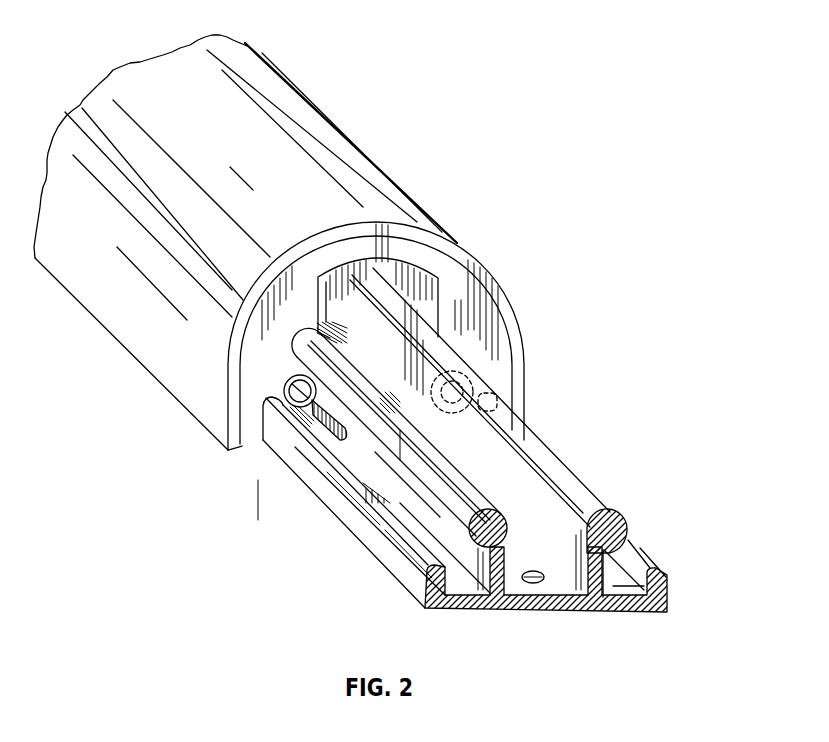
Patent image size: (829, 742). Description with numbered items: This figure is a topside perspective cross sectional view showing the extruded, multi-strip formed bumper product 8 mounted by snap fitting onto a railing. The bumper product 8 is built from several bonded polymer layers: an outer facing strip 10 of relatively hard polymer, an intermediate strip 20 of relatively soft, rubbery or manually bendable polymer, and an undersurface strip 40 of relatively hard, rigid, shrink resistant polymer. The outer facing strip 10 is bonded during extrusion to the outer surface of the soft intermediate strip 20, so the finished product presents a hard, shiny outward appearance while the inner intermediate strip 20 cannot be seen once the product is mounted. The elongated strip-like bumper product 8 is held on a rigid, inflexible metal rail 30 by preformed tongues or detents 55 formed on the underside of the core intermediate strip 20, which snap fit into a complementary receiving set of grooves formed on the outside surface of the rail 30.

The multi-strip formed bumper product 8 is at (478, 130).
The outer facing strip 10 is at (518, 316).
The intermediate strip 20 is at (493, 353).
The rail 30 is at (667, 575).
The undersurface strip 40 is at (417, 277).
The tongues or detents 55 is at (340, 412).